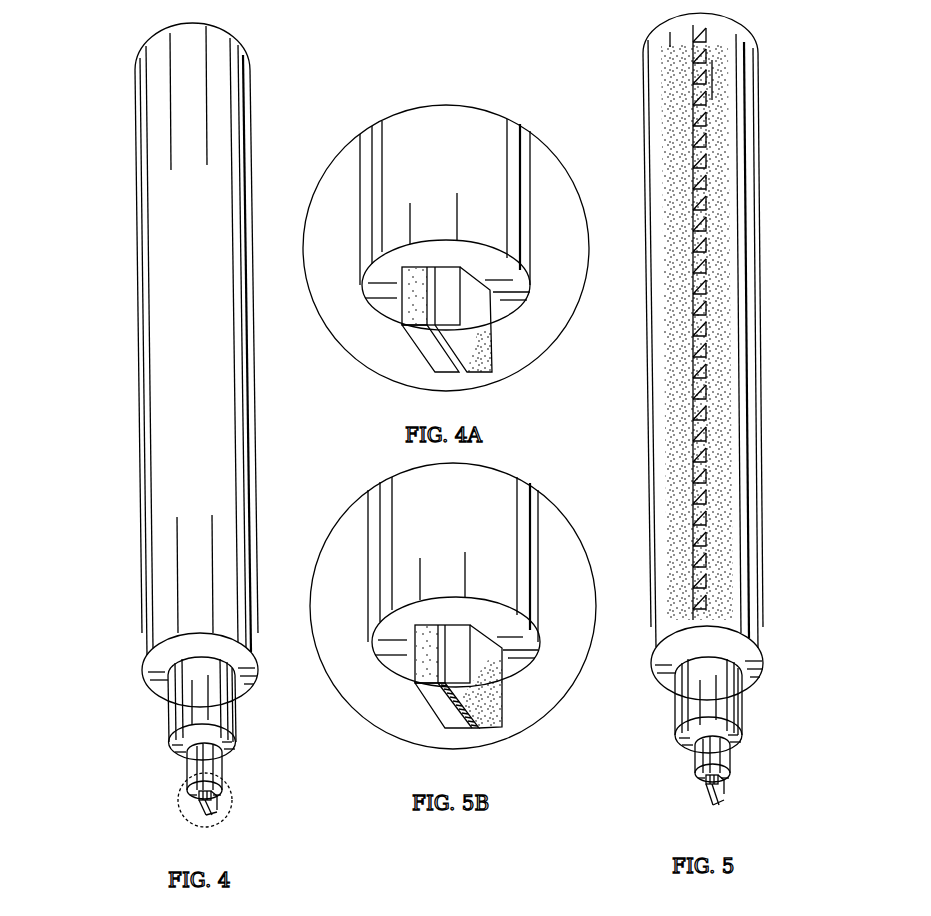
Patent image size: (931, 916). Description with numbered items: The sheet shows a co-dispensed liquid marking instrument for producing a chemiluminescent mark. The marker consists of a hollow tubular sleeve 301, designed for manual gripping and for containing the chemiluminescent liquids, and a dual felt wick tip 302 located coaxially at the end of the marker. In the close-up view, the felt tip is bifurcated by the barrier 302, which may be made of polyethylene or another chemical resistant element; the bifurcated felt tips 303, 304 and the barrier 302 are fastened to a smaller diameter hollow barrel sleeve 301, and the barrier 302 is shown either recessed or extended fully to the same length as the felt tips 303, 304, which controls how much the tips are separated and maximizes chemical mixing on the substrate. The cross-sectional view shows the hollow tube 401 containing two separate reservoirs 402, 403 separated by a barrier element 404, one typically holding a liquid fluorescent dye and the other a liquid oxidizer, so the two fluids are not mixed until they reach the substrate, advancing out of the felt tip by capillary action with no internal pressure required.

In FIG. 4, the hollow tubular sleeve 301 is at (131, 310).
In FIG. 4A, the hollow tubular sleeve 301 is at (348, 143).
In FIG. 4, the barrier 302 is at (198, 812).
In FIG. 4A, the barrier 302 is at (433, 277).
In FIG. 4A, the bifurcated felt tip 303 is at (420, 332).
In FIG. 4A, the bifurcated felt tip 304 is at (457, 330).
In FIG. 5B, the hollow tube 401 is at (363, 505).
In FIG. 5, the hollow tube 401 is at (772, 296).
In FIG. 5B, the reservoir 402 is at (443, 647).
In FIG. 5, the reservoir 402 is at (723, 140).
In FIG. 5B, the reservoir 403 is at (435, 695).
In FIG. 5, the reservoir 403 is at (660, 240).
In FIG. 5B, the barrier element 404 is at (472, 695).
In FIG. 5, the barrier element 404 is at (700, 378).